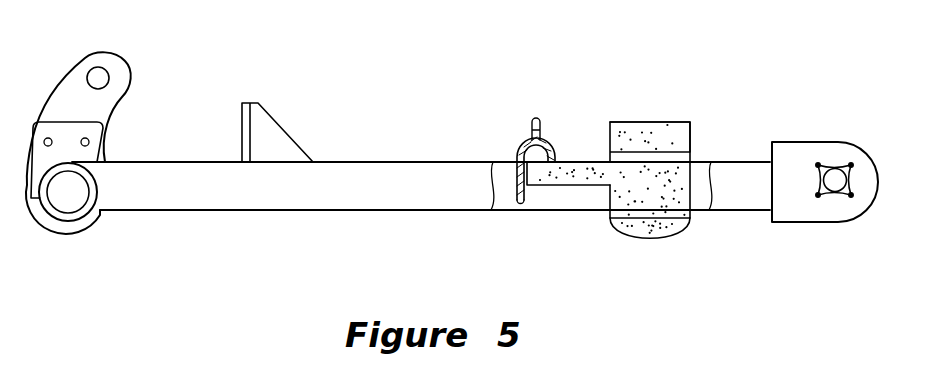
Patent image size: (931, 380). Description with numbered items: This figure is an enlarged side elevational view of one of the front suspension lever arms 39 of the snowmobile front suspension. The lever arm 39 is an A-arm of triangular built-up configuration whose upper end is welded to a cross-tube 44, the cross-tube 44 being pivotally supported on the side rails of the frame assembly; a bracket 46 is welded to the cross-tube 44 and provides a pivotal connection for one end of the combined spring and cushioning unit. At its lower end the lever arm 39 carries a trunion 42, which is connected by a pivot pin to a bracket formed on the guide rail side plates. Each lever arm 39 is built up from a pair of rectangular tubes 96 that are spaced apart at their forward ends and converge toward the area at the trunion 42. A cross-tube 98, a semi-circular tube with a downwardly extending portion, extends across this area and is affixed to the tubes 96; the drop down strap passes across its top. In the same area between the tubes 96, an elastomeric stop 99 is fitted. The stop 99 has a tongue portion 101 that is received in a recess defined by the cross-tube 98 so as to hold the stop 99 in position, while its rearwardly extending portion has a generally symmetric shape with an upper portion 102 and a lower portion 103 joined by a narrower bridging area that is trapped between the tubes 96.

The lever arm 39 is at (394, 158).
The trunion 42 is at (823, 142).
The cross-tube 44 is at (72, 219).
The bracket 46 is at (107, 105).
The rectangular tube 96 is at (400, 203).
The cross-tube 98 is at (550, 143).
The elastomeric stop 99 is at (664, 118).
The tongue portion 101 is at (577, 170).
The upper portion 102 is at (693, 133).
The lower portion 103 is at (670, 240).